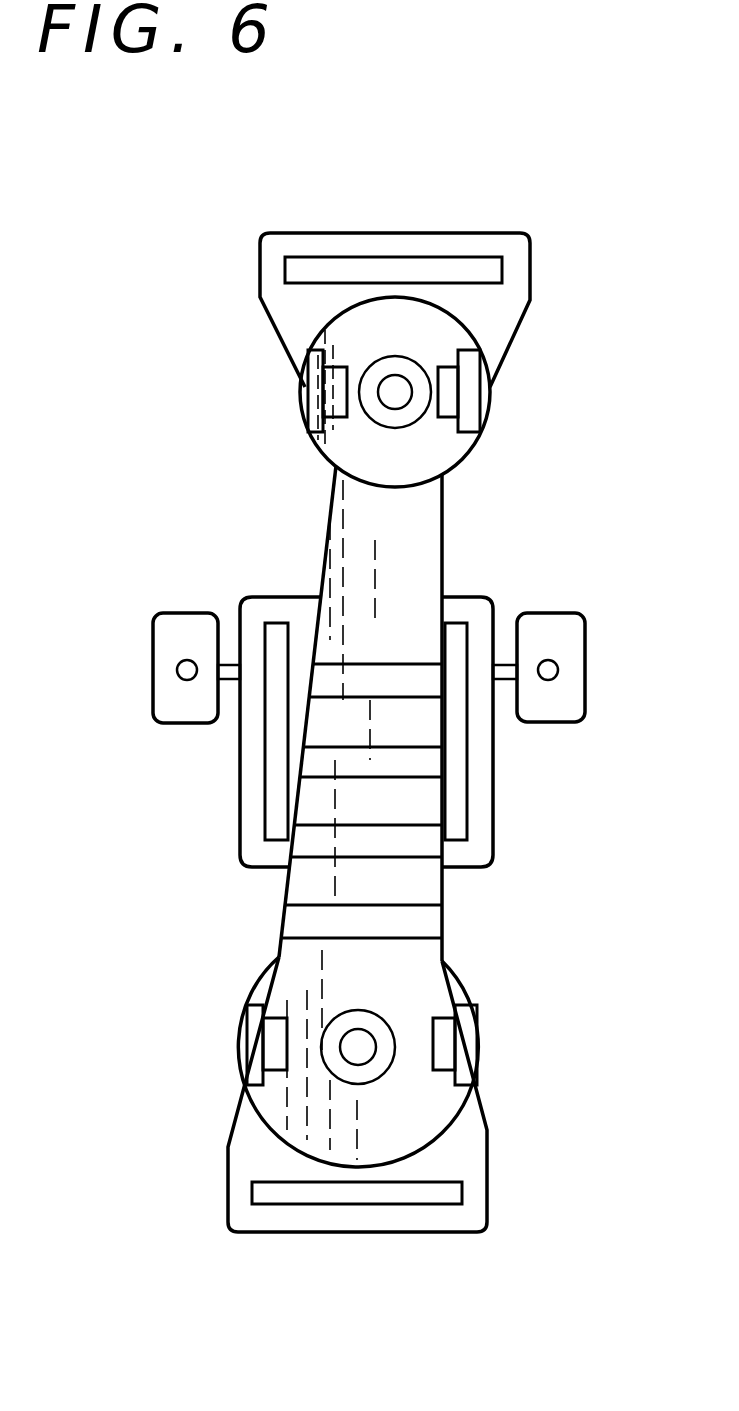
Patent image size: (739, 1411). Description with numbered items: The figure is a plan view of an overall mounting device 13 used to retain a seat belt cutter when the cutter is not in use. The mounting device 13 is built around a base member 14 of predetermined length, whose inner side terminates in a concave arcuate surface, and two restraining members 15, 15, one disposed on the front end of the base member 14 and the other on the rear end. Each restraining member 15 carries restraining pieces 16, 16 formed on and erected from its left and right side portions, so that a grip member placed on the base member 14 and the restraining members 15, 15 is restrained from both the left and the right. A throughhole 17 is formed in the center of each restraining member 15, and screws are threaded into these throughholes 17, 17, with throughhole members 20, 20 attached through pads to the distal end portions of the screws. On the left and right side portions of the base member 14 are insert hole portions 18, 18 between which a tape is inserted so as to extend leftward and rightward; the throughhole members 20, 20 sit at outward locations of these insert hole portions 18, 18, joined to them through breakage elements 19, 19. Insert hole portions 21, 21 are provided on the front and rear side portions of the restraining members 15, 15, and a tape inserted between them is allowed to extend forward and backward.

The mounting device 13 is at (371, 730).
The base member 14 is at (415, 541).
The restraining member 15 is at (437, 333).
The restraining piece 16 is at (310, 386).
The throughhole 17 is at (388, 383).
The insert hole portion 18 is at (272, 806).
The breakage element 19 is at (230, 665).
The throughhole member 20 is at (170, 630).
The insert hole portion 21 is at (430, 262).